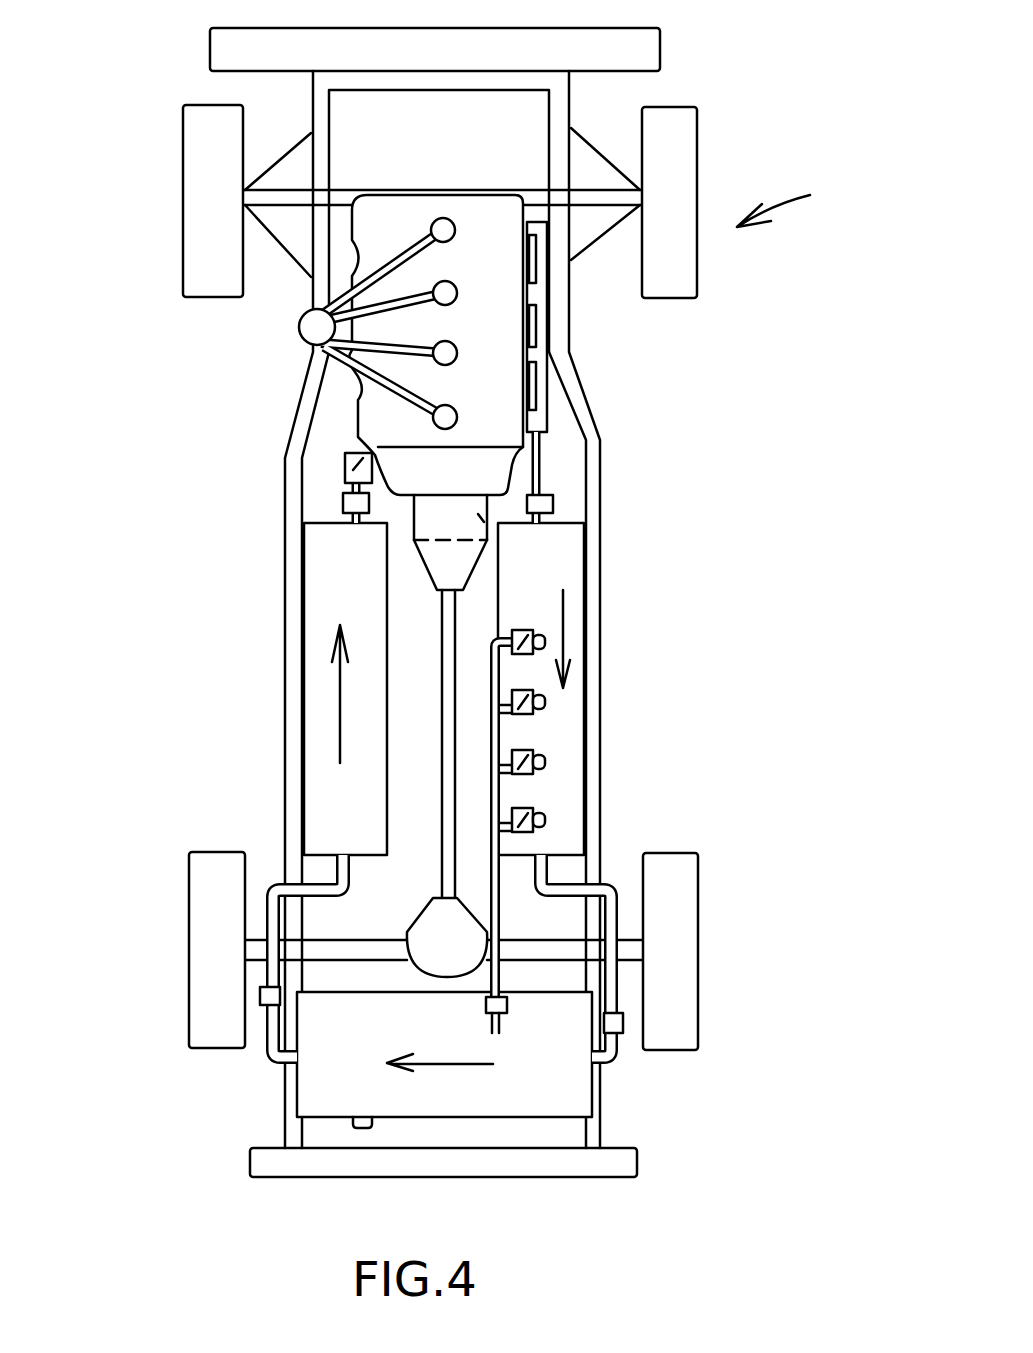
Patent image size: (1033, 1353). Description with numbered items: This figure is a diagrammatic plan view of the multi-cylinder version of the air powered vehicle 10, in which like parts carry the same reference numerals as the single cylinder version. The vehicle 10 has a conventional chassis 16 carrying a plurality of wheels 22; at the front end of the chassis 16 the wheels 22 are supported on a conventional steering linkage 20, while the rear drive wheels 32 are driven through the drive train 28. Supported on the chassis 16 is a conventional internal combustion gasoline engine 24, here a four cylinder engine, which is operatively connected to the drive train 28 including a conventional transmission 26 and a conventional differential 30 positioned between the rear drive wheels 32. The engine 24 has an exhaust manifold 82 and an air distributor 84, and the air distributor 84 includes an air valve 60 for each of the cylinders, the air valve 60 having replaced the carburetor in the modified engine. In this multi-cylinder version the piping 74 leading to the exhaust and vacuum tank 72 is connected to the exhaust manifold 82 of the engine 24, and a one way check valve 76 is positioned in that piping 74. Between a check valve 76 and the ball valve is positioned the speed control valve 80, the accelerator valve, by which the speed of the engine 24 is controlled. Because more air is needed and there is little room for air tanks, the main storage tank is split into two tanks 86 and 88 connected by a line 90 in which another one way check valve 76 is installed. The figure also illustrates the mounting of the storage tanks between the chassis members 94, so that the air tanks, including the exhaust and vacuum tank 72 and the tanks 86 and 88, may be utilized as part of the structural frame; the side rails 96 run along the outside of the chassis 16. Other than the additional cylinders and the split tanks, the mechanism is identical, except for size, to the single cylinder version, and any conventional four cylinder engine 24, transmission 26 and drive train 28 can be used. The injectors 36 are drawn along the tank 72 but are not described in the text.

The vehicle 10 is at (807, 197).
The chassis 16 is at (587, 403).
The steering linkage 20 is at (287, 150).
The wheels 22 is at (183, 167).
The engine 24 is at (436, 346).
The transmission 26 is at (440, 528).
The drive train 28 is at (480, 518).
The differential 30 is at (450, 971).
The rear drive wheels 32 is at (213, 957).
The fuel injector 36 is at (525, 645).
The air valve 60 is at (450, 243).
The exhaust and vacuum tank 72 is at (551, 590).
The piping 74 is at (543, 455).
The one way check valve 76 is at (343, 503).
The speed control valve 80 is at (343, 457).
The exhaust manifold 82 is at (533, 296).
The air distributor 84 is at (300, 333).
The tank 86 is at (377, 1058).
The tank 88 is at (323, 623).
The line 90 is at (318, 888).
The chassis members 94 is at (595, 672).
The side rail 96 is at (292, 503).